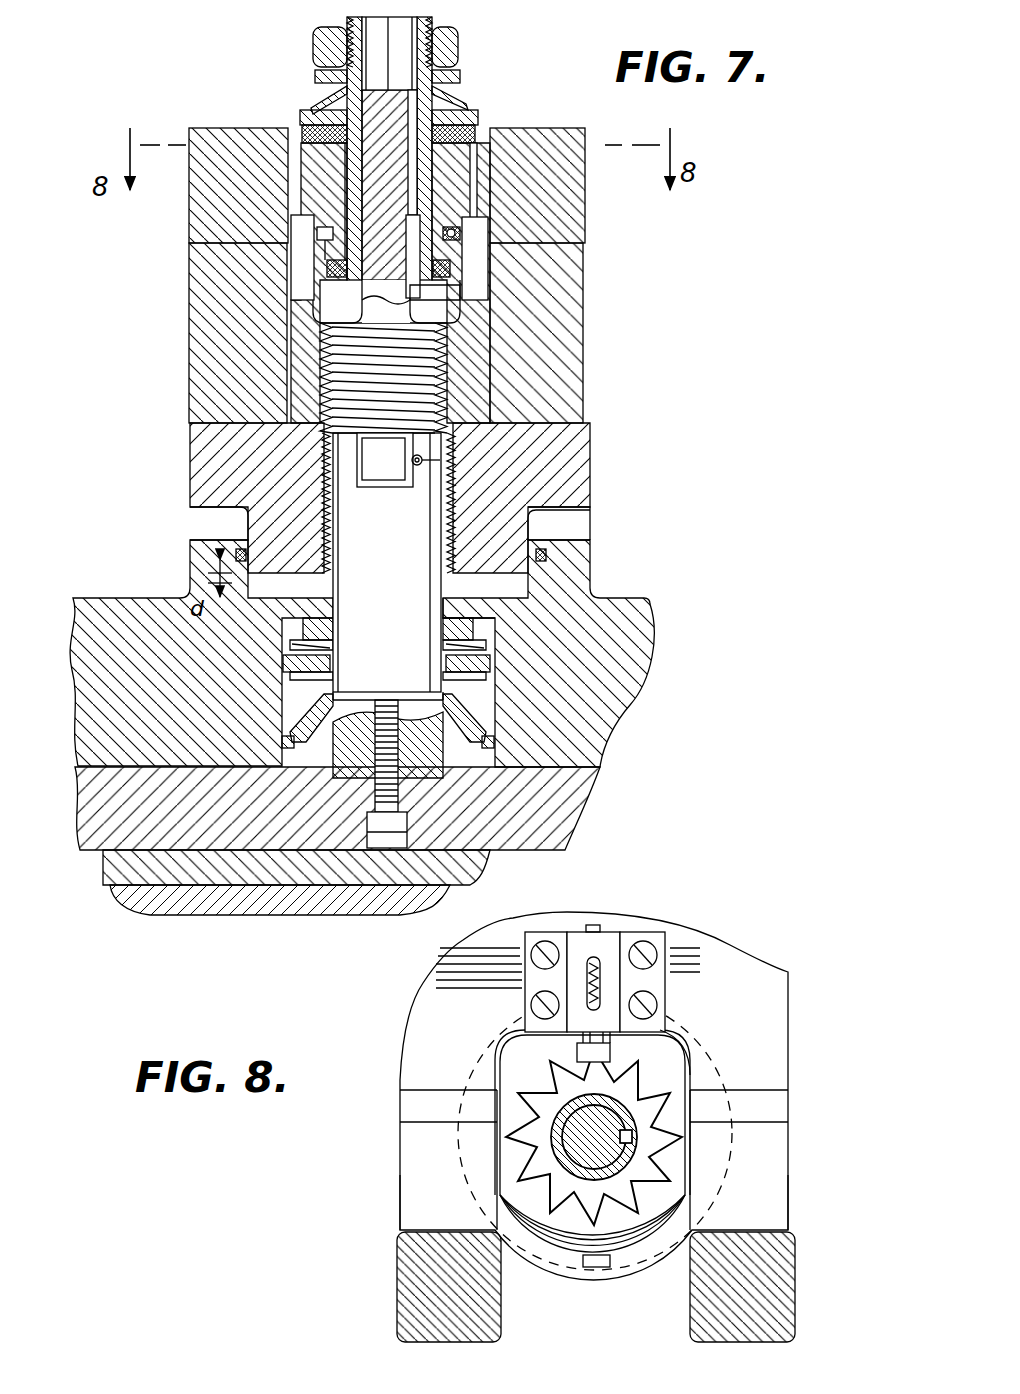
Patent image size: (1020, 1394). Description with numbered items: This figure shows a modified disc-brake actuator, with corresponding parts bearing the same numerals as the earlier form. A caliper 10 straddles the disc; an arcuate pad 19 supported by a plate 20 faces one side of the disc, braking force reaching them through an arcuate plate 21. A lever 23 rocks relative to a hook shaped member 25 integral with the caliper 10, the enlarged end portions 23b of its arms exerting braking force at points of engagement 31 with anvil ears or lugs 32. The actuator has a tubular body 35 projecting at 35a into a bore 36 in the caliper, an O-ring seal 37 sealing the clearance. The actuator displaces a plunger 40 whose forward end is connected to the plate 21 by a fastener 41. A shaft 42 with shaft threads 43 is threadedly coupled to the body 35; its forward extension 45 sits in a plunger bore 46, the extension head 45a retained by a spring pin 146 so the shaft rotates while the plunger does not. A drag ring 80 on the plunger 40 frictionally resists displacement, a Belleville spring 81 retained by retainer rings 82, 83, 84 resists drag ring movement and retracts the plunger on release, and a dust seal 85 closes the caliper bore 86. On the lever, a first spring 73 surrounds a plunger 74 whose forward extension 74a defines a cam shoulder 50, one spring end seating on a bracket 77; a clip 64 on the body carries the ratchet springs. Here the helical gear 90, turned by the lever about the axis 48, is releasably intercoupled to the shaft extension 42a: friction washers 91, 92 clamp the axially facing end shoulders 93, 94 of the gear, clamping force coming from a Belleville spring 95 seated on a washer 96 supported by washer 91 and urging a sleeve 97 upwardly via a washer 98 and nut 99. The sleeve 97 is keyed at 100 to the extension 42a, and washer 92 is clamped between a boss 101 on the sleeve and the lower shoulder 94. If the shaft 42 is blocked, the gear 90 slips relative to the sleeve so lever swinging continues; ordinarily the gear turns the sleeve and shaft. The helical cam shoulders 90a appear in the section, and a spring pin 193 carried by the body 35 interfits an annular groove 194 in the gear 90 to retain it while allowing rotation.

In FIG. 7, the caliper 10 is at (640, 598).
In FIG. 7, the arcuate braking part or pad 19 is at (160, 900).
In FIG. 7, the plate 20 is at (118, 876).
In FIG. 7, the arcuate plate 21 is at (575, 810).
In FIG. 8, the lever 23 is at (728, 960).
In FIG. 7, the enlarged end portions of lever arms 23b is at (189, 300).
In FIG. 8, the enlarged end portions of lever arms 23b is at (400, 1182).
In FIG. 7, the hook shaped member 25 is at (189, 232).
In FIG. 8, the hook shaped member 25 is at (397, 1290).
In FIG. 7, the points of engagement 31 is at (205, 423).
In FIG. 7, the anvil ears or lugs 32 is at (190, 452).
In FIG. 7, the tubular body 35 is at (495, 392).
In FIG. 7, the body projection 35a is at (532, 530).
In FIG. 7, the bore 36 is at (500, 612).
In FIG. 7, the O-ring seal 37 is at (548, 555).
In FIG. 7, the plunger 40 is at (388, 566).
In FIG. 7, the fastener 41 is at (375, 800).
In FIG. 7, the shaft 42 is at (458, 372).
In FIG. 7, the shaft extension 42a is at (305, 180).
In FIG. 8, the shaft extension 42a is at (590, 1160).
In FIG. 7, the shaft threads 43 is at (322, 440).
In FIG. 7, the shaft forward extension 45 is at (360, 452).
In FIG. 7, the extension head 45a is at (390, 482).
In FIG. 7, the plunger bore 46 is at (360, 480).
In FIG. 7, the axis 48 is at (395, 215).
In FIG. 8, the cam shoulder 50 is at (577, 1050).
In FIG. 8, the clip 64 is at (567, 1255).
In FIG. 8, the first spring 73 is at (600, 930).
In FIG. 8, the plunger 74 is at (582, 930).
In FIG. 8, the forward extension of plunger 74a is at (555, 1036).
In FIG. 8, the bracket 77 is at (600, 975).
In FIG. 7, the drag part or ring 80 is at (303, 628).
In FIG. 7, the Belleville spring 81 is at (300, 645).
In FIG. 7, the retainer ring 82 is at (290, 663).
In FIG. 7, the retainer ring 83 is at (480, 668).
In FIG. 7, the retainer ring 84 is at (470, 640).
In FIG. 7, the dust seal 85 is at (478, 720).
In FIG. 7, the caliper bore 86 is at (285, 718).
In FIG. 7, the helical gear 90 is at (478, 168).
In FIG. 8, the helical gear 90 is at (490, 1122).
In FIG. 8, the helical cam shoulders 90a is at (672, 1075).
In FIG. 7, the friction washer 91 is at (302, 118).
In FIG. 7, the friction washer 92 is at (448, 270).
In FIG. 7, the end shoulder 93 is at (322, 134).
In FIG. 7, the lower end shoulder 94 is at (318, 268).
In FIG. 7, the Belleville spring 95 is at (440, 100).
In FIG. 7, the washer 96 is at (318, 108).
In FIG. 7, the sleeve 97 is at (345, 200).
In FIG. 8, the sleeve 97 is at (545, 1132).
In FIG. 7, the washer 98 is at (318, 76).
In FIG. 7, the nut 99 is at (318, 36).
In FIG. 7, the key 100 is at (455, 292).
In FIG. 8, the key 100 is at (632, 1137).
In FIG. 7, the boss 101 is at (340, 280).
In FIG. 7, the spring pin 146 is at (440, 460).
In FIG. 7, the spring pin 193 is at (458, 233).
In FIG. 7, the annular groove 194 is at (470, 248).